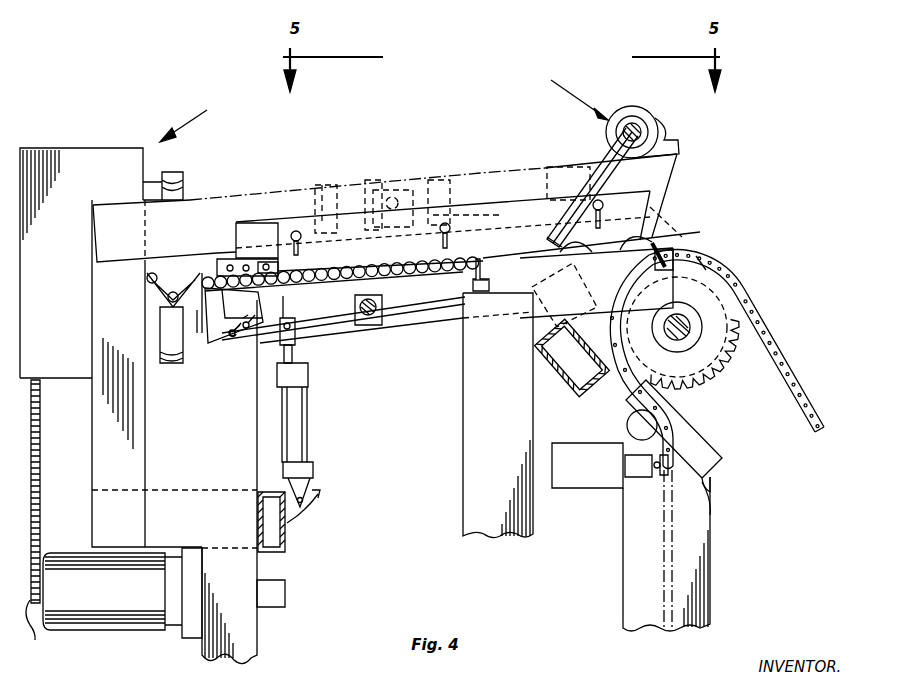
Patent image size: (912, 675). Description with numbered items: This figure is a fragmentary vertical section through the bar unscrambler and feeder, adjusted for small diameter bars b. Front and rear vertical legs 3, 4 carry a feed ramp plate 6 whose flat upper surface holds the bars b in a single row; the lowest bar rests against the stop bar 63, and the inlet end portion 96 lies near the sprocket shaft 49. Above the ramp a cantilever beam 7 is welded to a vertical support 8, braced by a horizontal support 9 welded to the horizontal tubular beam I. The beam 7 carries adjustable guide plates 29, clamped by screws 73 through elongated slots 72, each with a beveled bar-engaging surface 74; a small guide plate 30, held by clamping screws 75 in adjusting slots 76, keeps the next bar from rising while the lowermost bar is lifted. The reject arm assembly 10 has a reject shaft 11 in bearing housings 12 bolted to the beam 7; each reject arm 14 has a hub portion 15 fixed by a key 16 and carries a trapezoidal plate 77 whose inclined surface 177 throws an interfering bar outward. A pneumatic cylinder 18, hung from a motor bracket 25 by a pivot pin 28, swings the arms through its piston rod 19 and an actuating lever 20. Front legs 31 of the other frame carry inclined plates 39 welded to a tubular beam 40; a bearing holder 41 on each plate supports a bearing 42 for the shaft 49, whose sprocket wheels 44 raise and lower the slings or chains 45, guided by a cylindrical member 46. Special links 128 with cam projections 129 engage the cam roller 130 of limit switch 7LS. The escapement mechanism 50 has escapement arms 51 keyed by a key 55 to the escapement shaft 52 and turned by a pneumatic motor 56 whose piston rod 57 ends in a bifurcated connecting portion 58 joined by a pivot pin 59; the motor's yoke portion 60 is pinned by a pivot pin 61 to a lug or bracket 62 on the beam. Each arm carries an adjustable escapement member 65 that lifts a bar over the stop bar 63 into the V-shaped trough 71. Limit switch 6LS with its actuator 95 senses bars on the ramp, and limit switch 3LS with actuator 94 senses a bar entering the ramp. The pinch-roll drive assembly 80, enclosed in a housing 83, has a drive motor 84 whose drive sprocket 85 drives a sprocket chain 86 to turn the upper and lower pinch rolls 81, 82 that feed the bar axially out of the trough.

The front vertical legs 3 is at (257, 645).
The rear vertical legs 4 is at (462, 448).
The feed ramp plate 6 is at (428, 322).
The limit switch 6LS is at (474, 286).
The cantilever beam 7 is at (240, 198).
The limit switch 7LS is at (587, 488).
The vertical support 8 is at (95, 283).
The horizontal support 9 is at (172, 492).
The reject arm assembly 10 is at (566, 92).
The reject shaft 11 is at (648, 114).
The bearing housing 12 is at (670, 140).
The reject arm 14 is at (582, 166).
The hub portion 15 is at (615, 109).
The key 16 is at (633, 123).
The pneumatic cylinder 18 is at (478, 175).
The piston rod 19 is at (560, 165).
The actuating lever 20 is at (670, 190).
The motor bracket 25 is at (320, 200).
The pivot pin 28 is at (392, 190).
The guide plate 29 is at (240, 224).
The guide plate 30 is at (222, 258).
The front vertical leg 31 is at (710, 556).
The plate 39 is at (710, 490).
The tubular beam 40 is at (563, 378).
The bearing holder 41 is at (710, 443).
The bearing 42 is at (700, 310).
The sprocket wheel 44 is at (715, 362).
The sling or chain 45 is at (793, 400).
The cylindrical member 46 is at (628, 418).
The sprocket shaft 49 is at (673, 340).
The escapement mechanism 50 is at (404, 403).
The escapement arm 51 is at (338, 314).
The escapement shaft 52 is at (370, 325).
The key 55 is at (372, 300).
The pneumatic motor 56 is at (312, 408).
The piston rod 57 is at (298, 357).
The bifurcated connecting portion 58 is at (297, 332).
The pivot pin 59 is at (287, 299).
The yoke portion 60 is at (318, 488).
The pivot pin 61 is at (308, 508).
The lug or bracket 62 is at (318, 498).
The stop bar 63 is at (200, 274).
The escapement member 65 is at (218, 336).
The trough 71 is at (148, 272).
The slots 72 is at (448, 238).
The clamping screws 73 is at (292, 233).
The beveled bar-engaging surface 74 is at (660, 242).
The clamping screws 75 is at (280, 270).
The adjusting slots 76 is at (232, 260).
The trapezoidal plate 77 is at (560, 247).
The pinch-roll drive assembly 80 is at (191, 116).
The upper pinch roll 81 is at (185, 170).
The lower pinch roll 82 is at (172, 365).
The housing 83 is at (88, 148).
The drive motor 84 is at (120, 617).
The drive sprocket 85 is at (34, 632).
The sprocket chain 86 is at (44, 468).
The actuator 94 is at (674, 252).
The actuator 95 is at (488, 284).
The inlet end portion 96 is at (660, 222).
The special link 128 is at (712, 513).
The cam projection 129 is at (660, 452).
The cam roller 130 is at (657, 478).
The inclined bar-engaging surface 177 is at (568, 284).
The limit switch 3LS is at (706, 262).
The horizontal tubular beam I is at (287, 549).
The bars b is at (448, 266).